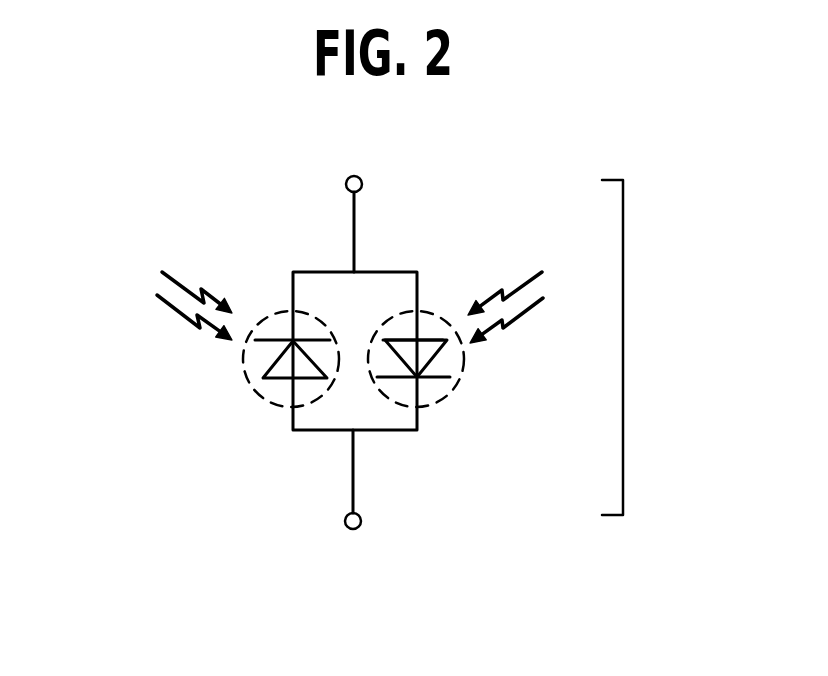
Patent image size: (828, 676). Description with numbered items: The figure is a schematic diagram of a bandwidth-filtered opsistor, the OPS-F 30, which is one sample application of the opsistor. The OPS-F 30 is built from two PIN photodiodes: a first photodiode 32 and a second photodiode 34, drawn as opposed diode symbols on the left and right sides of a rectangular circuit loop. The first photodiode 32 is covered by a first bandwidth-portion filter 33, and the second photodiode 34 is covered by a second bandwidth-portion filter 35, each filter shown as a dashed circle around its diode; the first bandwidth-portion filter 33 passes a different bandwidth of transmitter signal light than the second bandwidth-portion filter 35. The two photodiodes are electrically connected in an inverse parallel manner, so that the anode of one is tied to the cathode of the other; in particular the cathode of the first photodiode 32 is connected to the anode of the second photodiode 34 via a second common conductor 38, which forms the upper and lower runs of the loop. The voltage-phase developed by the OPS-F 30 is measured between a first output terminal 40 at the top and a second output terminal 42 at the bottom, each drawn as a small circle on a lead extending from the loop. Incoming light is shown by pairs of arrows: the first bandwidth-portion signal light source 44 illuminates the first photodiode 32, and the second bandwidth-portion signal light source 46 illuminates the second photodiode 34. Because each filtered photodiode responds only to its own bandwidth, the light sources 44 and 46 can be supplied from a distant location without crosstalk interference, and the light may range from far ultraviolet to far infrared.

The bandwidth-filtered opsistor (OPS-F) 30 is at (623, 359).
The first photodiode 32 is at (281, 378).
The first bandwidth-portion filter 33 is at (270, 313).
The second photodiode 34 is at (437, 380).
The second bandwidth-portion filter 35 is at (432, 314).
The second common conductor 38 is at (322, 269).
The first output terminal 40 is at (362, 181).
The second output terminal 42 is at (361, 517).
The first bandwidth-portion signal light source (WPSLS-1) 44 is at (153, 282).
The second bandwidth-portion signal light source (WPSLS-2) 46 is at (545, 280).